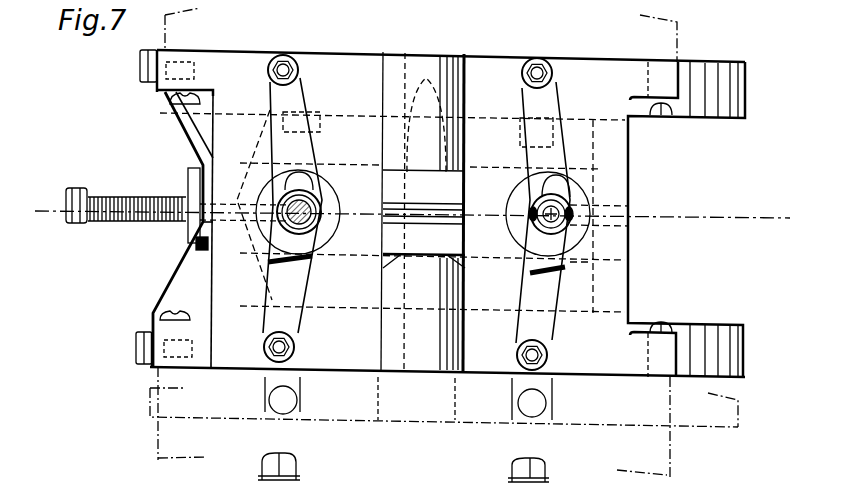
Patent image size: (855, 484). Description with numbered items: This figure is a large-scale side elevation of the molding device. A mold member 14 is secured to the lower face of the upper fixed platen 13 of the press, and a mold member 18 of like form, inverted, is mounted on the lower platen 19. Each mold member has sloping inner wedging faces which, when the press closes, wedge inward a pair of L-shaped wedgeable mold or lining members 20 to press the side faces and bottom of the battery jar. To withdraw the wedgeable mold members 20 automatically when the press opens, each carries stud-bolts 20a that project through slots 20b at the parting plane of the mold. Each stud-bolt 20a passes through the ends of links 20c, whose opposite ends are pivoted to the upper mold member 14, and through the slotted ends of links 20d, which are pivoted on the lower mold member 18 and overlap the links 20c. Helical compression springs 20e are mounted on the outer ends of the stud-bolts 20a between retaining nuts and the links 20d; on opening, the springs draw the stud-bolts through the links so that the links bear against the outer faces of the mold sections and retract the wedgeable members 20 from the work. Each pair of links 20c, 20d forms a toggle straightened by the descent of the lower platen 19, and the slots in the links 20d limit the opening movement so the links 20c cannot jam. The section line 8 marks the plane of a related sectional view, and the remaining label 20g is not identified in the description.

The section line 8- 8 is at (48, 215).
The upper fixed platen 13 is at (683, 40).
The upper mold member 14 is at (220, 113).
The lower mold member 18 is at (745, 373).
The lower platen 19 is at (655, 455).
The wedgeable mold member 20 is at (497, 118).
The stud-bolt 20a is at (322, 205).
The slot 20b is at (262, 205).
The link 20c is at (185, 133).
The link 20d is at (175, 283).
The helical compression spring 20e is at (118, 216).
The bolt head 20g is at (68, 216).